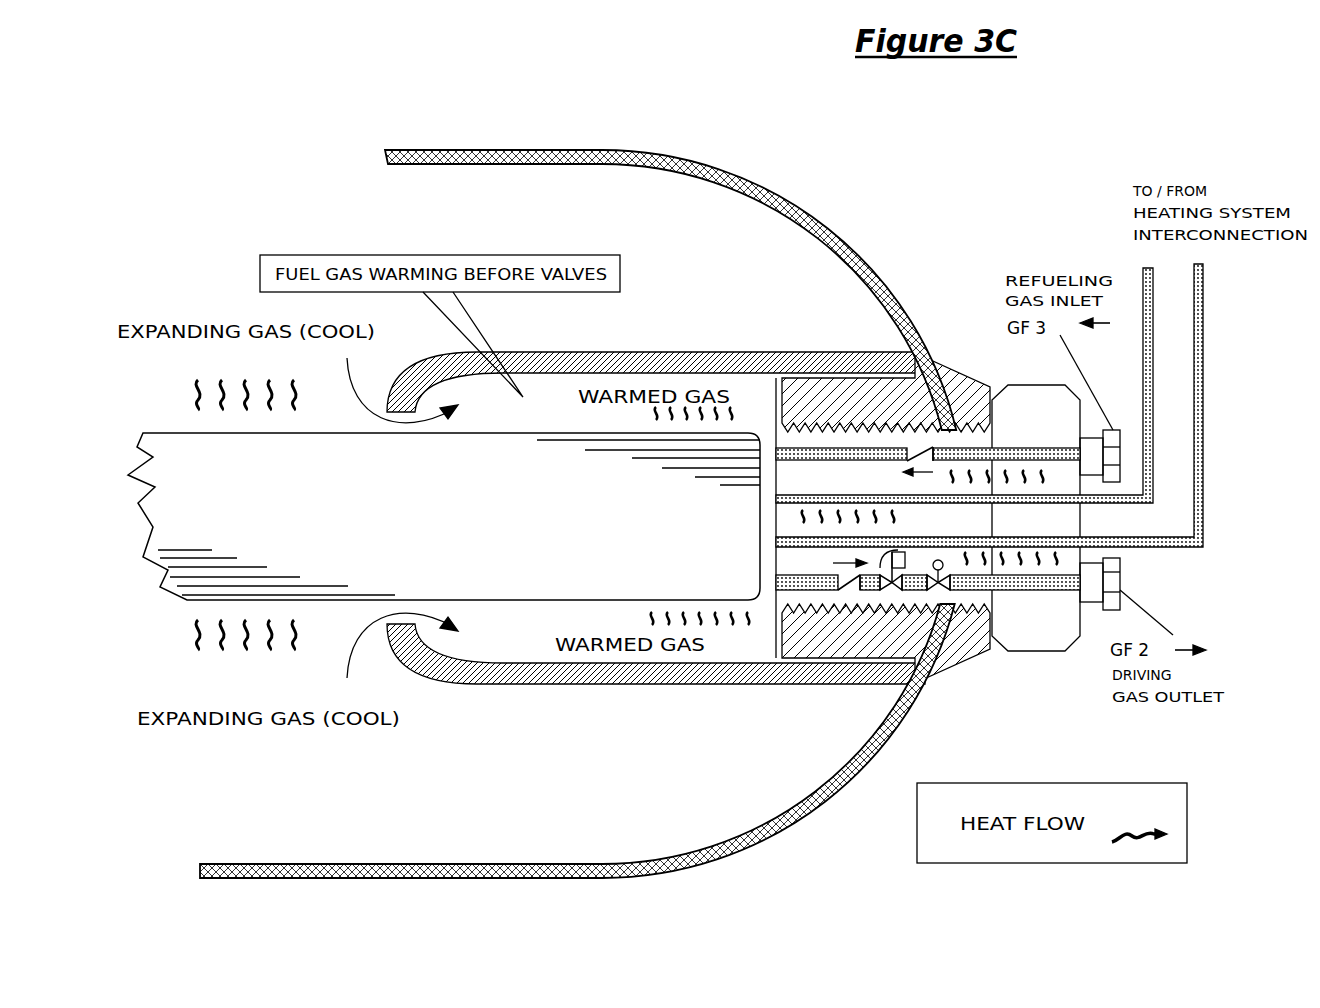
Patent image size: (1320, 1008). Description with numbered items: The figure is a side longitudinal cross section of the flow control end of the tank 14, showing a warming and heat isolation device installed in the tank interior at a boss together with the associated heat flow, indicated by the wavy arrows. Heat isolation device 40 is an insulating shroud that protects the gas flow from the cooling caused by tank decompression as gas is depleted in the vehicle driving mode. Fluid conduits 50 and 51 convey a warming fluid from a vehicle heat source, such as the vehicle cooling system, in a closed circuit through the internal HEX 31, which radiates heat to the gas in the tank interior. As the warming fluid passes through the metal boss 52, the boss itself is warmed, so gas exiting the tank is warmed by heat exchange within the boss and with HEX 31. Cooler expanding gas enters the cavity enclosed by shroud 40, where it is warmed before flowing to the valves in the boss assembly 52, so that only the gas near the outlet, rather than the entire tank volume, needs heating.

The tank 14 is at (588, 150).
The internal HEX 31 is at (444, 516).
The heat isolation device 40 is at (765, 352).
The fluid conduit 50 is at (1143, 292).
The fluid conduit 51 is at (1198, 405).
The metal boss 52 is at (1043, 638).